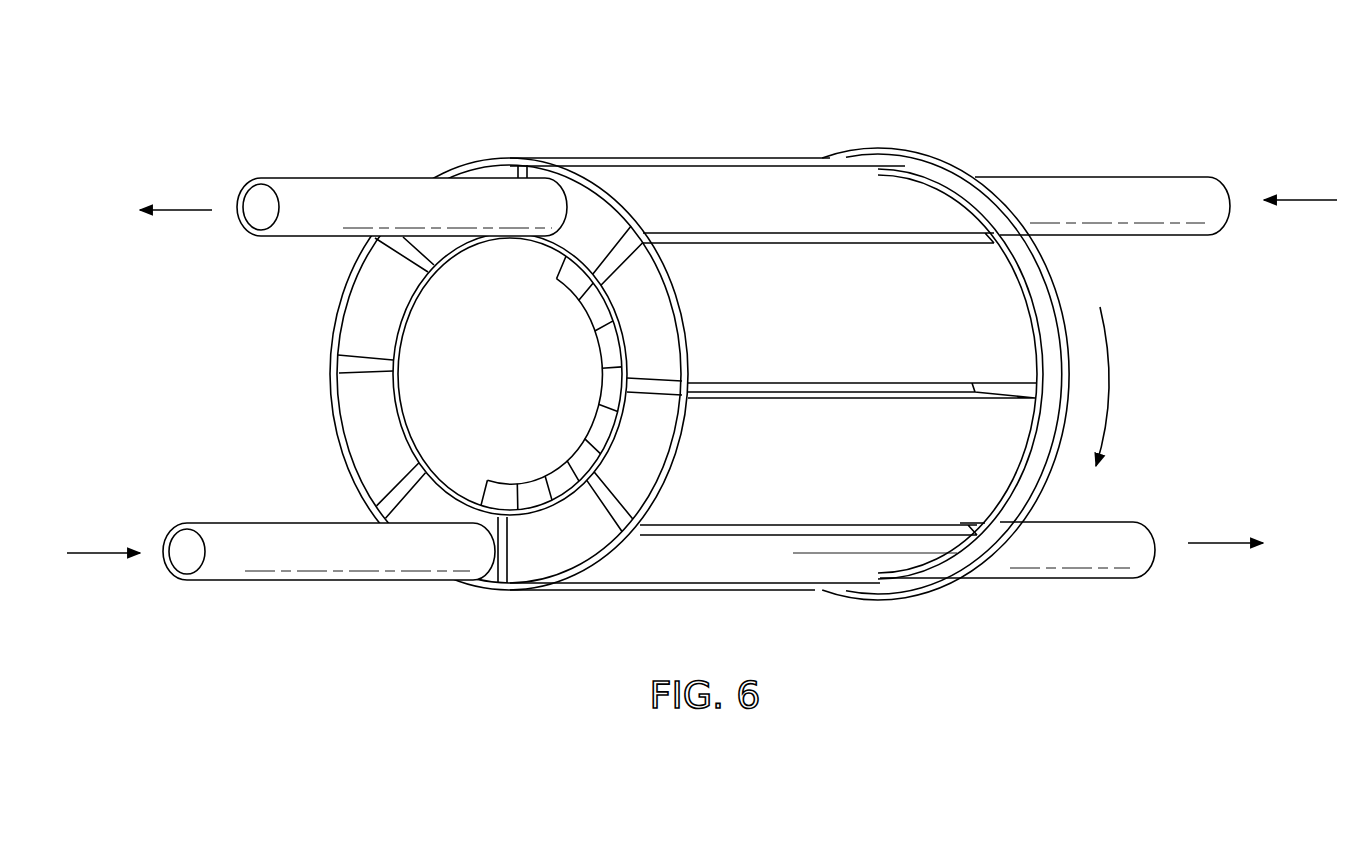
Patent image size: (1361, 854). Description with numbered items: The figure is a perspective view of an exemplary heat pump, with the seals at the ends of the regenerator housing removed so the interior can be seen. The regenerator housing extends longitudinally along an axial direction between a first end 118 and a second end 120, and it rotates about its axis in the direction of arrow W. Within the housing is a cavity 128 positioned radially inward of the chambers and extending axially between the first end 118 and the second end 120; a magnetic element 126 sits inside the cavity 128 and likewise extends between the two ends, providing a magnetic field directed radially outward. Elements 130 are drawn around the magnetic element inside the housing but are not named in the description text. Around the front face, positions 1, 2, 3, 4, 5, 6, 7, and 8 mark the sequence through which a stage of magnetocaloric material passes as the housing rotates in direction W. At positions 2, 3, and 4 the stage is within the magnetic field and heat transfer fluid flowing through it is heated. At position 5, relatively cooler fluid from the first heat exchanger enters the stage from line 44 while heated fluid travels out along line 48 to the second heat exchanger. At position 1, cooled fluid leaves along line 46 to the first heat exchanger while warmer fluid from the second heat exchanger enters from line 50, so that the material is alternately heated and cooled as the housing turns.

The first end 118 is at (440, 157).
The second end 120 is at (860, 136).
The magnetic element 126 is at (570, 277).
The cavity 128 is at (423, 392).
The fins/segments 130 is at (593, 312).
The position 1 is at (610, 249).
The position 2 is at (654, 349).
The position 3 is at (619, 484).
The position 4 is at (531, 550).
The position 5 is at (428, 508).
The position 6 is at (365, 401).
The position 7 is at (403, 275).
The position 8 is at (497, 173).
The line 44 is at (245, 550).
The line 46 is at (320, 198).
The line 48 is at (1070, 552).
The line 50 is at (1138, 198).
The arrow W is at (1094, 368).